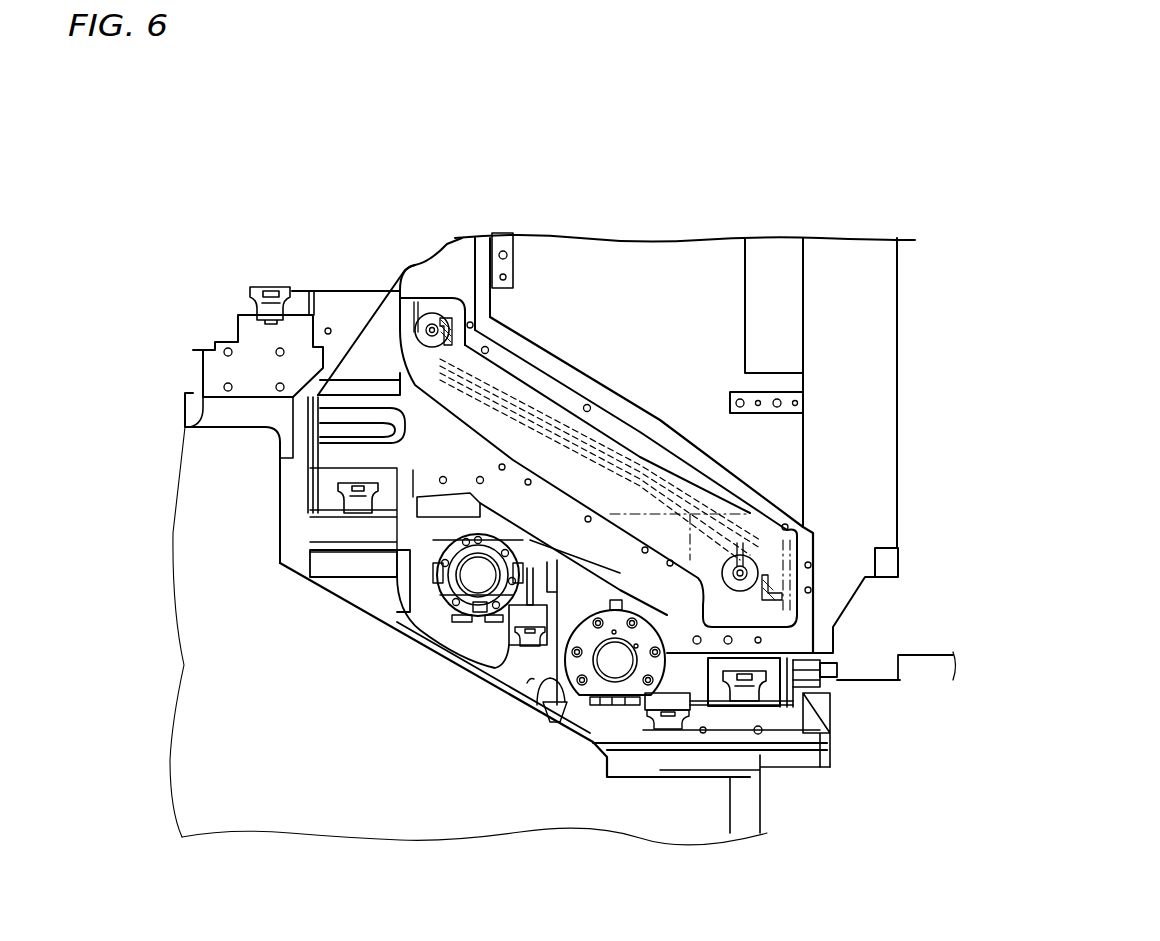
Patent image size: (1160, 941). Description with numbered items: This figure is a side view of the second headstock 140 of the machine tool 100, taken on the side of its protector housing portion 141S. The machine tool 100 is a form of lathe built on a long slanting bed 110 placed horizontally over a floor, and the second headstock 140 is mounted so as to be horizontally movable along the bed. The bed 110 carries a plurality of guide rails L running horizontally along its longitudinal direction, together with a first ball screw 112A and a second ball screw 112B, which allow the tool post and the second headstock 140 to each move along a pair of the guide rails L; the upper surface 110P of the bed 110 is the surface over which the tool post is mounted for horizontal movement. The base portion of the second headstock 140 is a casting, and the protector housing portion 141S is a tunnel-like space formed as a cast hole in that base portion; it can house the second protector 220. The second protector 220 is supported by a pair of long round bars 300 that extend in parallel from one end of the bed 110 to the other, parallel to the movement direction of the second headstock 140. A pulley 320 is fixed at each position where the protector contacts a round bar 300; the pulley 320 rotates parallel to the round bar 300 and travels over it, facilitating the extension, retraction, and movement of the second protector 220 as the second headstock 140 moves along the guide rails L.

The machine tool 100 is at (478, 145).
The bed 110 is at (497, 797).
The upper surface of the bed 110P is at (535, 705).
The first ball screw 112A is at (613, 680).
The second ball screw 112B is at (478, 575).
The second headstock 140 is at (611, 265).
The protector housing portion 141S is at (615, 485).
The second protector 220 is at (415, 332).
The round bar 300 is at (510, 402).
The pulley 320 is at (418, 330).
The guide rail L is at (343, 513).